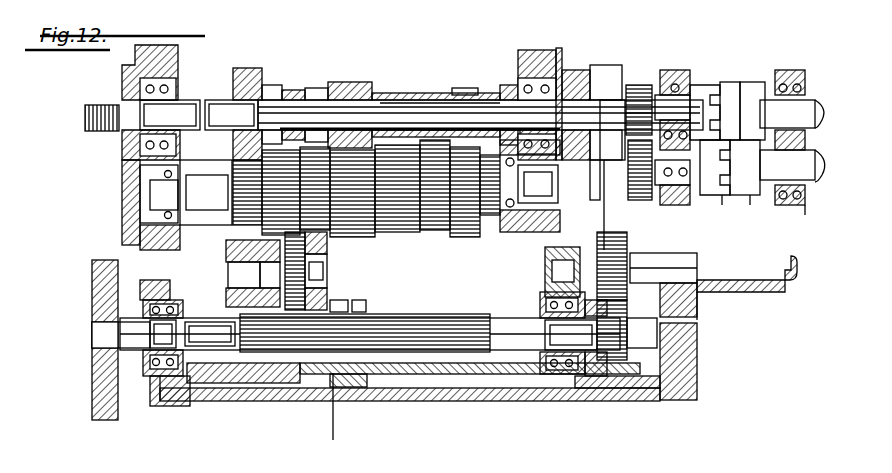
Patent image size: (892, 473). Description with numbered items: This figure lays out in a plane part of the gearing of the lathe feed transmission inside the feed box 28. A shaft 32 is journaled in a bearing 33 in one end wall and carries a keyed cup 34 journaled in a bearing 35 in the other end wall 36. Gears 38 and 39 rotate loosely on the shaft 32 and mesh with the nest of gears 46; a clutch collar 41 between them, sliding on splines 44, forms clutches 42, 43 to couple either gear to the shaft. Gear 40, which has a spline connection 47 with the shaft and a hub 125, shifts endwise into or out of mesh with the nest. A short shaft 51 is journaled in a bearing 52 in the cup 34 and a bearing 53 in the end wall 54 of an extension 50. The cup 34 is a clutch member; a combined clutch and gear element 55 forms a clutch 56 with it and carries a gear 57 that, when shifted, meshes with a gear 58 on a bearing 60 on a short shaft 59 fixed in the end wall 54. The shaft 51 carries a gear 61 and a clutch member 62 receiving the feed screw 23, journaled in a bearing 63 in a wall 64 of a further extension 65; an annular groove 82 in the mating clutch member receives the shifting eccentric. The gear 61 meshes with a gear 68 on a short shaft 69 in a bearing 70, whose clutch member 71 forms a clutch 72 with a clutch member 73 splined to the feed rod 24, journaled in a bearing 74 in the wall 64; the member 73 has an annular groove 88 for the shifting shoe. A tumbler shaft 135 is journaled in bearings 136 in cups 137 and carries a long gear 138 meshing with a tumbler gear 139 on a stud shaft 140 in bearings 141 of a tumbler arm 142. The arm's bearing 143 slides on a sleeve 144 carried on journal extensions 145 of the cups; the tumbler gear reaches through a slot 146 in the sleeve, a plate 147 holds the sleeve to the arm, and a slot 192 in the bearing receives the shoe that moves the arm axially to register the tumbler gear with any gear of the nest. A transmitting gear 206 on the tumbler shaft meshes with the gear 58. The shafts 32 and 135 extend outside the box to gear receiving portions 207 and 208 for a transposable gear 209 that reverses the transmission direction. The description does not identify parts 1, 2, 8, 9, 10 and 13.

The housing wall 1 is at (238, 212).
The gear 2 is at (262, 224).
The gear cluster 8 is at (385, 238).
The gear 9 is at (458, 238).
The bearing housing 10 is at (512, 226).
The axis reference 13 is at (310, 257).
The feed screw 23 is at (808, 92).
The feed rod 24 is at (800, 205).
The casing 28 is at (495, 404).
The shaft 32 is at (182, 112).
The bearing 33 is at (125, 82).
The cup 34 is at (557, 60).
The bearing 35 is at (508, 86).
The end wall 36 is at (528, 60).
The gear 38 is at (247, 68).
The gear 39 is at (365, 92).
The gear 40 is at (462, 88).
The clutch collar 41 is at (315, 88).
The clutch 42 is at (267, 86).
The clutch 43 is at (340, 84).
The splines 44 is at (290, 90).
The nest of gears 46 is at (420, 242).
The spline connection 47 is at (440, 112).
The extension 50 is at (698, 397).
The short shaft 51 is at (605, 110).
The bearing 52 is at (568, 70).
The bearing 53 is at (672, 82).
The end wall 54 is at (675, 200).
The combined clutch and gear element 55 is at (580, 68).
The clutch 56 is at (588, 68).
The gear 57 is at (600, 66).
The gear 58 is at (640, 200).
The short shaft 59 is at (698, 268).
The bearing 60 is at (633, 240).
The gear 61 is at (648, 95).
The clutch member 62 is at (700, 92).
The bearing 63 is at (782, 70).
The wall 64 is at (784, 190).
The further extension 65 is at (795, 298).
The gear 68 is at (620, 178).
The short shaft 69 is at (618, 200).
The bearing 70 is at (706, 196).
The clutch member 71 is at (722, 204).
The clutch 72 is at (750, 204).
The clutch member 73 is at (738, 196).
The bearing 74 is at (800, 208).
The annular groove 82 is at (728, 93).
The annular groove 88 is at (752, 92).
The hub 125 is at (440, 98).
The tumbler shaft 135 is at (217, 350).
The bearings 136 is at (176, 402).
The cups 137 is at (155, 404).
The long gear 138 is at (473, 352).
The tumbler gear 139 is at (325, 276).
The stud shaft 140 is at (330, 266).
The bearings 141 is at (233, 249).
The tumbler arm 142 is at (235, 280).
The bearing 143 is at (258, 384).
The sleeve 144 is at (390, 378).
The journal extensions 145 is at (530, 378).
The slot 146 is at (530, 298).
The plate 147 is at (328, 258).
The slot 192 is at (367, 306).
The transmitting gear 206 is at (618, 368).
The gear receiving portion 207 is at (86, 117).
The gear receiving portion 208 is at (100, 336).
The transposable gear 209 is at (106, 421).